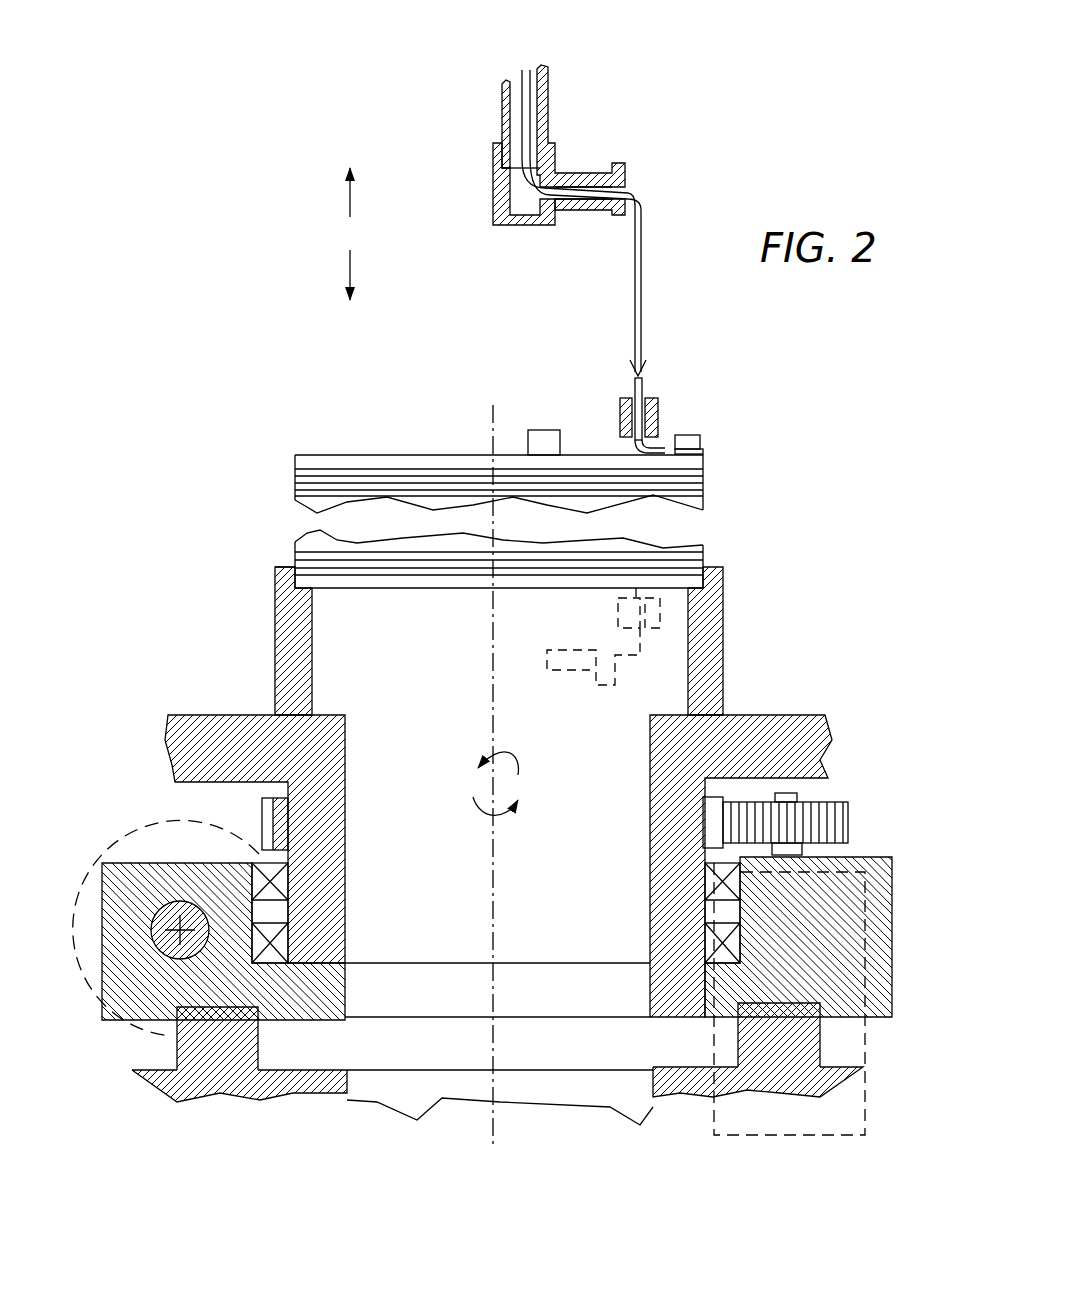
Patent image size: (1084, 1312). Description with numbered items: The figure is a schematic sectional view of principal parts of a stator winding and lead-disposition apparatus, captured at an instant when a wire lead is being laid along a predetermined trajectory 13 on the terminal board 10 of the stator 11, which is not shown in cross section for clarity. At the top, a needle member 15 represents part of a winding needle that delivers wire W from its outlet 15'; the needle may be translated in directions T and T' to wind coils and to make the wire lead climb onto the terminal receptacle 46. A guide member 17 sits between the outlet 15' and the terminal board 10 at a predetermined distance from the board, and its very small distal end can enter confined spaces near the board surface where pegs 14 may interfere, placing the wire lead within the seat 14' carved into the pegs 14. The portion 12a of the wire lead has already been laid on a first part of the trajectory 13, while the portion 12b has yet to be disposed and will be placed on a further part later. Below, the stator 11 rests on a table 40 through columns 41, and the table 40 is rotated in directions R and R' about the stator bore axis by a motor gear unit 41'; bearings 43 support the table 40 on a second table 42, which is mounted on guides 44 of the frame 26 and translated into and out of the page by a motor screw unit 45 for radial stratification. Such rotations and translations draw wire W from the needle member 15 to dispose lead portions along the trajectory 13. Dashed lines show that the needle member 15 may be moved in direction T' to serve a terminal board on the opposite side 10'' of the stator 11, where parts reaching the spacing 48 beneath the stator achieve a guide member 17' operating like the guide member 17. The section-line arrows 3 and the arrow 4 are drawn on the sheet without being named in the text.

The wire feed nozzle 4 is at (538, 50).
The wire W is at (542, 113).
The outlet 15' is at (644, 174).
The section line 3 is at (640, 78).
The direction T is at (380, 192).
The direction T' is at (383, 275).
The needle member 15 is at (495, 478).
The terminal board 10 is at (499, 454).
The terminal receptacle 46 is at (540, 430).
The predetermined trajectory 13 is at (591, 400).
The portion of wire lead 12b is at (642, 378).
The guide member 17 is at (685, 403).
The portion of wire lead 12a is at (668, 442).
The pegs 14 is at (747, 452).
The seat 14' is at (736, 472).
The stator 11 is at (253, 513).
The opposite side 10'' is at (562, 559).
The spacing 48 is at (330, 607).
The columns 41 is at (507, 641).
The guide member 17' is at (593, 636).
The table 40 is at (779, 714).
The motor screw unit 45 is at (142, 798).
The direction R is at (523, 755).
The direction R' is at (516, 821).
The motor gear unit 41' is at (812, 939).
The bearings 43 is at (290, 942).
The table 42 is at (658, 1017).
The guides 44 is at (260, 1043).
The frame 26 is at (313, 1102).